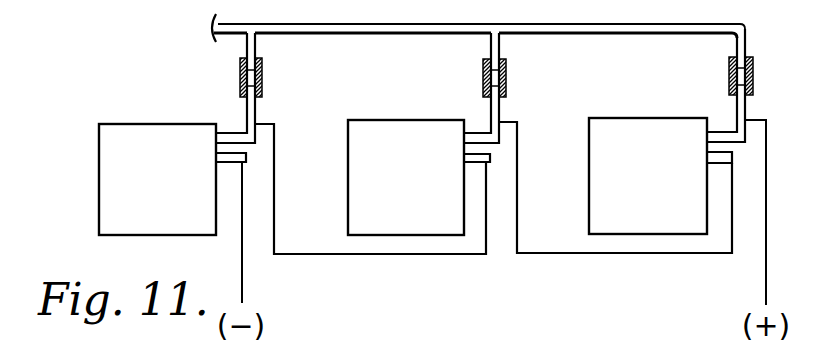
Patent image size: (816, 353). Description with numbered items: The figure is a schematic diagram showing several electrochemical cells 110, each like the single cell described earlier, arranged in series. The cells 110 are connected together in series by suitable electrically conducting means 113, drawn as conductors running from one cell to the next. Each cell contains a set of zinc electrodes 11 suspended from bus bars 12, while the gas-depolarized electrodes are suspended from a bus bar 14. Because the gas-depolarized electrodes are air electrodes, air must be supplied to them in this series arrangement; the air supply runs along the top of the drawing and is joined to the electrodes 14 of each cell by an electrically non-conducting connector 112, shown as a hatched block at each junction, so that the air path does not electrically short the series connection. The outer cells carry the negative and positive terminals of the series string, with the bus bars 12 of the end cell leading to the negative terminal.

The zinc electrodes 11 is at (512, 24).
The bus bar 14 is at (257, 113).
The electrically non-conducting connector 112 is at (263, 72).
The cells 110 is at (102, 192).
The bus bars 12 is at (224, 162).
The electrically conducting means 113 is at (460, 256).